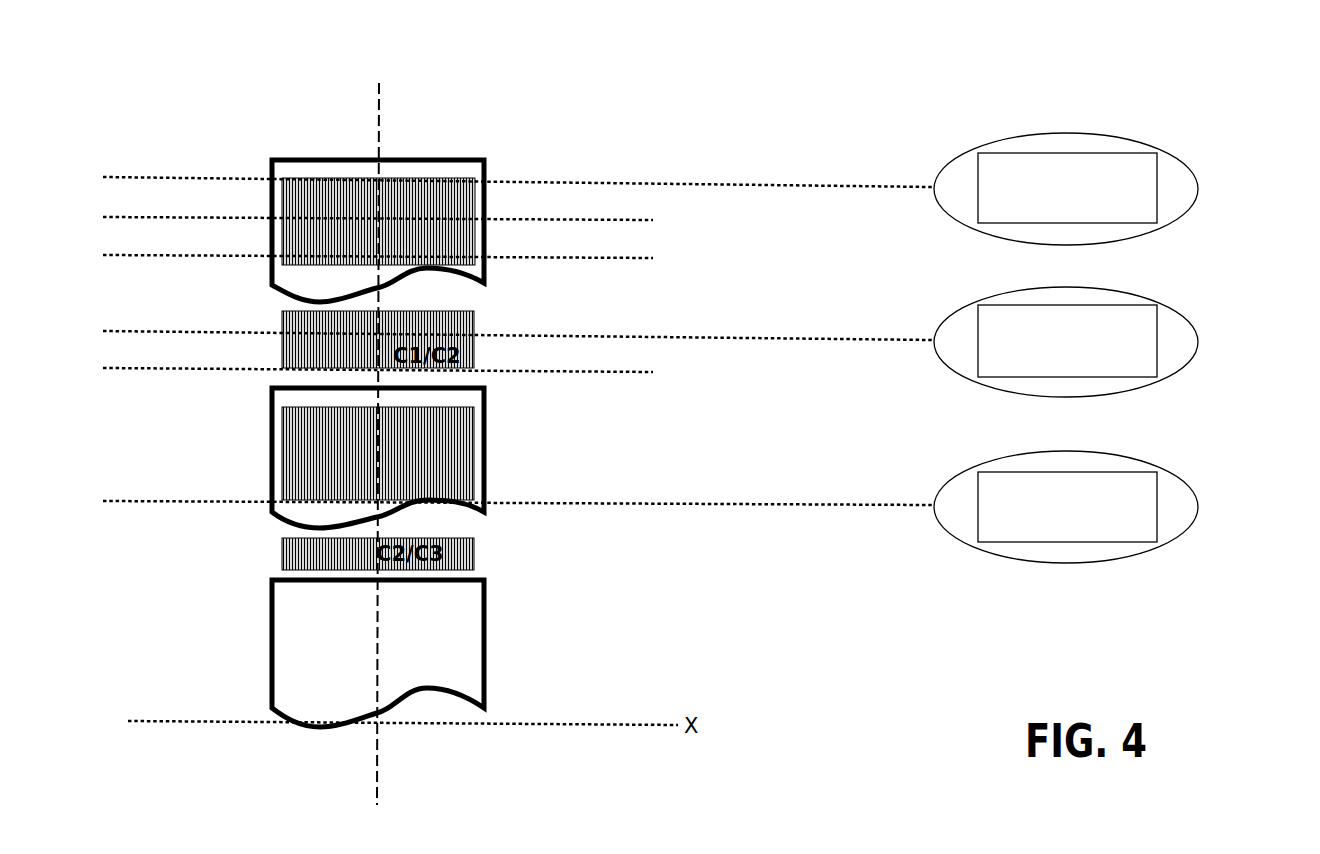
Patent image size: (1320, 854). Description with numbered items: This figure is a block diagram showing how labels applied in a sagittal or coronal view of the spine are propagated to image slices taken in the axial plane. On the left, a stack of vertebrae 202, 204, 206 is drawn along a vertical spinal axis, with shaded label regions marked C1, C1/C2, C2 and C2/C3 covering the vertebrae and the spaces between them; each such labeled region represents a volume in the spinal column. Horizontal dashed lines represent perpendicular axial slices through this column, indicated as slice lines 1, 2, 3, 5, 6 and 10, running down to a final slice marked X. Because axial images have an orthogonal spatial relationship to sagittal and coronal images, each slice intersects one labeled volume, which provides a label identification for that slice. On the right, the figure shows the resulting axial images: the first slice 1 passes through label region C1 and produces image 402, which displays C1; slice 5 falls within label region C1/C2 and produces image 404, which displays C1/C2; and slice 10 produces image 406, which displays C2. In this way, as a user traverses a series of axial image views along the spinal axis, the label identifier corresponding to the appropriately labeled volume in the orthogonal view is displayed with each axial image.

The first slice 1 is at (517, 173).
The slice line 2 is at (397, 223).
The slice line 3 is at (397, 259).
The slice 5 is at (517, 327).
The slice line 6 is at (397, 373).
The slice 10 is at (517, 491).
The vertebra 202 is at (317, 158).
The vertebra 204 is at (272, 447).
The vertebra 206 is at (272, 640).
The image 402 is at (1173, 157).
The image 404 is at (1175, 308).
The image 406 is at (1172, 472).